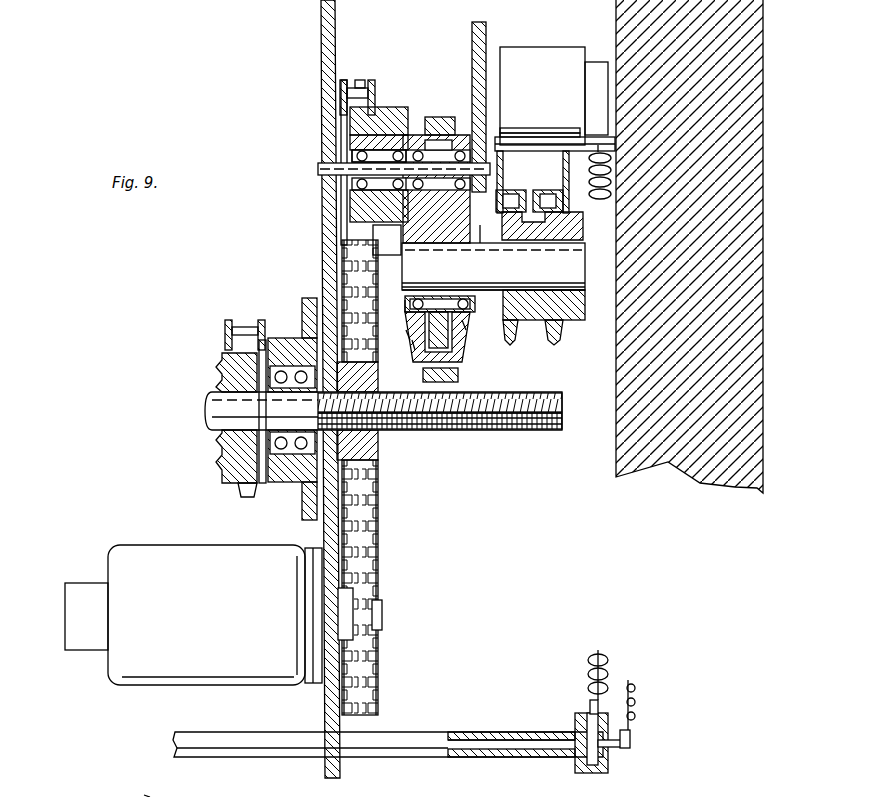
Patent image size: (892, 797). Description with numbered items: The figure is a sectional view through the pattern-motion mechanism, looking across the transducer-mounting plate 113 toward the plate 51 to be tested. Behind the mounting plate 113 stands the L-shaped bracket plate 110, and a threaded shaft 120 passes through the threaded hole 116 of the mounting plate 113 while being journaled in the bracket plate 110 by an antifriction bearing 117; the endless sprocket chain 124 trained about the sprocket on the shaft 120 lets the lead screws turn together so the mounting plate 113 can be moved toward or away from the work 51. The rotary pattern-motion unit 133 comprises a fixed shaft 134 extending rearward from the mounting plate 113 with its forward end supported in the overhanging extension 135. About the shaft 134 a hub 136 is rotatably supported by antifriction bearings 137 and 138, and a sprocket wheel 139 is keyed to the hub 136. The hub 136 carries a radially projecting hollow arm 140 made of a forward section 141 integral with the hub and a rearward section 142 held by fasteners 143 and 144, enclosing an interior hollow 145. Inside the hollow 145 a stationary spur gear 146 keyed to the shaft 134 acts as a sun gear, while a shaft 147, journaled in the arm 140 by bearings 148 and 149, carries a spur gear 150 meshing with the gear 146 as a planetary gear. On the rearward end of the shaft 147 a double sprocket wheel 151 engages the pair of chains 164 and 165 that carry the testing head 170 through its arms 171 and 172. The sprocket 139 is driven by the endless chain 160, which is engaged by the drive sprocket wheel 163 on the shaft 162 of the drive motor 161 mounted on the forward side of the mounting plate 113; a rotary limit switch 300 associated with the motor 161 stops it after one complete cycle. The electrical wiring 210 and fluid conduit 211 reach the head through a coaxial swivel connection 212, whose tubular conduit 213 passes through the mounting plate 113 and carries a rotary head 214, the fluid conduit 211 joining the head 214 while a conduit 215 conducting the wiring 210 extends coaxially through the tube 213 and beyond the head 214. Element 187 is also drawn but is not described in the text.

The plate 51 is at (698, 470).
The bracket plate 110 is at (302, 300).
The mounting plate 113 is at (321, 62).
The threaded hole 116 is at (386, 430).
The antifriction bearing 117 is at (272, 485).
The threaded shaft 120 is at (522, 432).
The endless sprocket chain 124 is at (228, 320).
The rotary pattern-motion unit 133 is at (394, 107).
The fixed shaft 134 is at (318, 170).
The extension of the mounting plate 135 is at (472, 42).
The hub 136 is at (352, 156).
The antifriction bearing 137 is at (341, 190).
The antifriction bearing 138 is at (388, 240).
The sprocket wheel 139 is at (350, 122).
The hollow arm 140 is at (458, 354).
The forward section 141 is at (417, 346).
The rearward section 142 is at (466, 324).
The fastener 143 is at (452, 117).
The fastener 144 is at (459, 376).
The interior hollow 145 is at (482, 228).
The stationary spur gear 146 is at (411, 135).
The planetary shaft 147 is at (560, 272).
The bearing 148 is at (402, 300).
The bearing 149 is at (484, 298).
The spur gear 150 is at (411, 336).
The sprocket wheel 151 is at (576, 318).
The endless sprocket chain 160 is at (380, 504).
The drive motor 161 is at (210, 600).
The motor shaft 162 is at (383, 614).
The drive sprocket wheel 163 is at (366, 594).
The sprocket chain 164 is at (512, 190).
The sprocket chain 165 is at (555, 185).
The testing head 170 is at (544, 47).
The arm 171 is at (516, 140).
The arm 172 is at (561, 150).
The member 187 is at (146, 796).
The electrical wiring 210 is at (636, 694).
The fluid conduit 211 is at (608, 682).
The coaxial swivel connection 212 is at (449, 729).
The tubular conduit 213 is at (446, 757).
The rotary head 214 is at (597, 773).
The conduit 215 is at (612, 746).
The rotary limit switch 300 is at (87, 583).